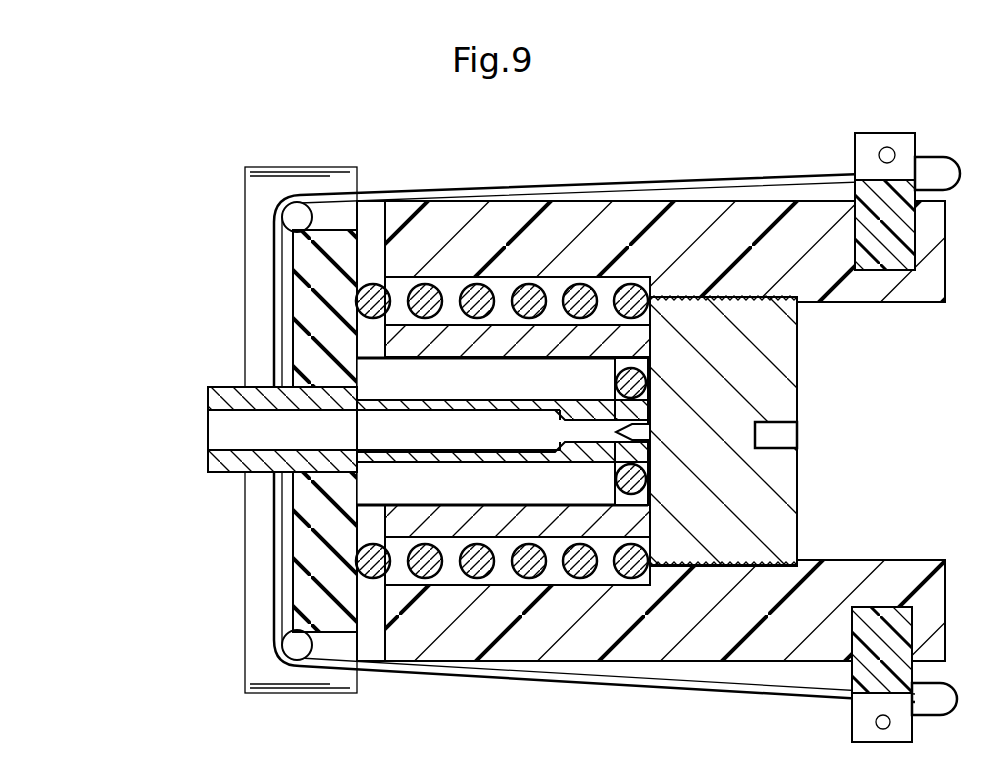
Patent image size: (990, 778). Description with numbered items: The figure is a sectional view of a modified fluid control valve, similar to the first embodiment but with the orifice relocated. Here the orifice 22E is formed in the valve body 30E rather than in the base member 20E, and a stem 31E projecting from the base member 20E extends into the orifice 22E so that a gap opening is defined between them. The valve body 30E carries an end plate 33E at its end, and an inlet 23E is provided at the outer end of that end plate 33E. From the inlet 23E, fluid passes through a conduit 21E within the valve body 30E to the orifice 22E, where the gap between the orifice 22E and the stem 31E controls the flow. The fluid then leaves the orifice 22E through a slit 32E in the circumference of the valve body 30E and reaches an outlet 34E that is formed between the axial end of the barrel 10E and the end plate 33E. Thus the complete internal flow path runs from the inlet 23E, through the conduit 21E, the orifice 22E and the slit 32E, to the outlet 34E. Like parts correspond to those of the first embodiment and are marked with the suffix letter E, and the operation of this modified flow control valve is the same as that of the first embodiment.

The barrel 10E is at (730, 202).
The base member 20E is at (797, 505).
The conduit 21E is at (407, 428).
The orifice 22E is at (593, 438).
The inlet 23E is at (222, 427).
The valve body 30E is at (495, 460).
The stem 31E is at (640, 435).
The slit 32E is at (514, 370).
The end plate 33E is at (243, 685).
The outlet 34E is at (373, 226).